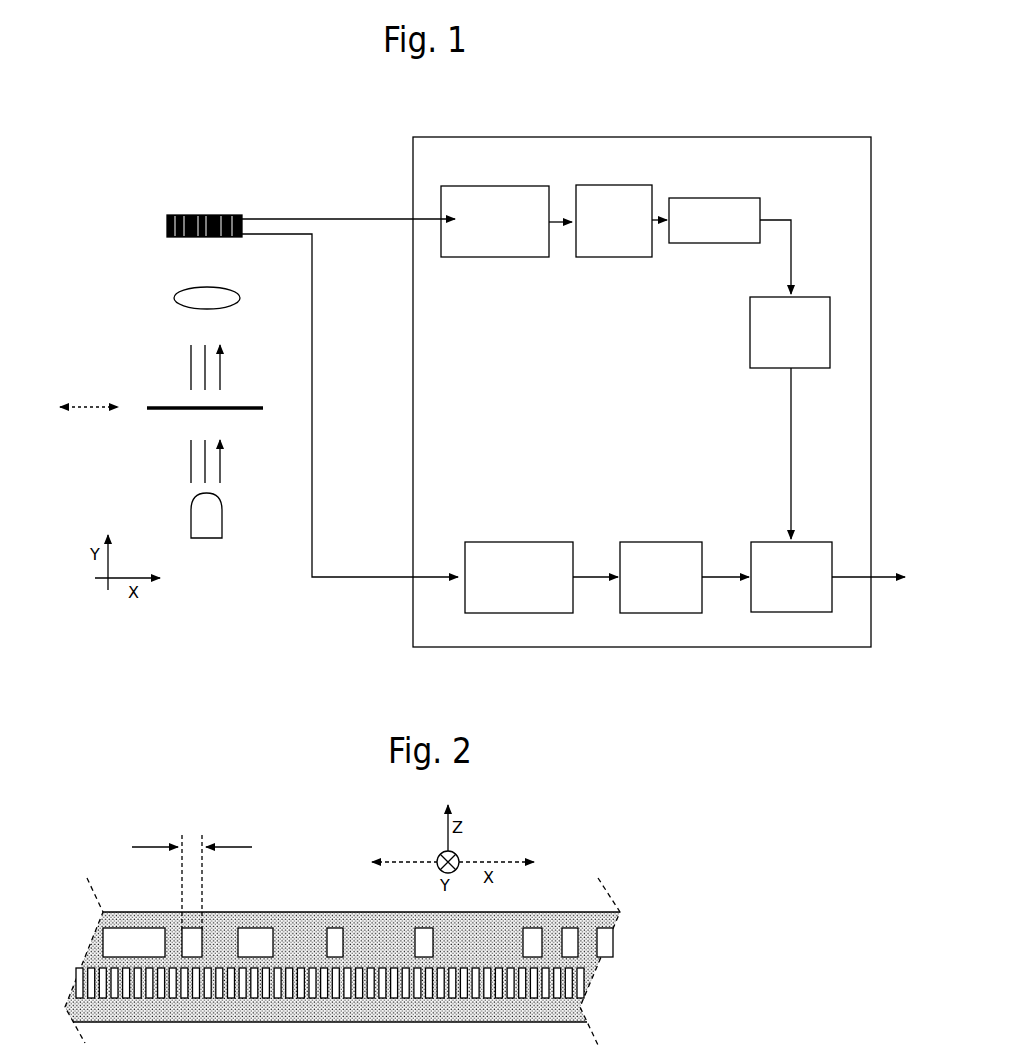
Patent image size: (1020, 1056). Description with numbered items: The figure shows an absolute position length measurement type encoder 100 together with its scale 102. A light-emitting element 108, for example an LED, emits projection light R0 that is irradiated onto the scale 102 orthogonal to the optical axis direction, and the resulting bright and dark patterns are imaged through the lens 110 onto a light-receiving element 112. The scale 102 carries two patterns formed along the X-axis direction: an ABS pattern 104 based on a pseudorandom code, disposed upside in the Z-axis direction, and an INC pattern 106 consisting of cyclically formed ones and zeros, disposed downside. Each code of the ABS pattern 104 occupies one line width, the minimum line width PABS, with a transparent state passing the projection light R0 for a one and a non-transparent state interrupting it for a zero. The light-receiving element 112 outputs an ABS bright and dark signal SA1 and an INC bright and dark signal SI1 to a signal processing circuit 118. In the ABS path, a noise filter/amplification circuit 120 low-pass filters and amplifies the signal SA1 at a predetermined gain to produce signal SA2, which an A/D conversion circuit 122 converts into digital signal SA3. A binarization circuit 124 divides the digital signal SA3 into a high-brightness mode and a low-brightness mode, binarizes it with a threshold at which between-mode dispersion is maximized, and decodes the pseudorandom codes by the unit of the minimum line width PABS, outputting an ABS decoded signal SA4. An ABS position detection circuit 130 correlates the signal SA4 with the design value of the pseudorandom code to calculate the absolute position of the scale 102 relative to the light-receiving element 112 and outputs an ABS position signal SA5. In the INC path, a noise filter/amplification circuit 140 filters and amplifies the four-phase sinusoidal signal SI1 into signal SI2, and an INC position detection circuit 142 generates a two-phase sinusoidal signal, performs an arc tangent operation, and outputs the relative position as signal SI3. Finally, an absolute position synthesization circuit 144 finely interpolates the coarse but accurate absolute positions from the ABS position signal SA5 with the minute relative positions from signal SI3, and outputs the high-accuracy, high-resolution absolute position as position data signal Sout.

In FIG. 1, the absolute position length measurement type encoder 100 is at (355, 136).
In FIG. 1, the scale 102 is at (180, 405).
In FIG. 2, the scale 102 is at (572, 912).
In FIG. 2, the ABS pattern 104 is at (607, 938).
In FIG. 2, the INC pattern 106 is at (582, 983).
In FIG. 1, the light-emitting element 108 is at (212, 521).
In FIG. 1, the lens 110 is at (228, 298).
In FIG. 1, the light-receiving element 112 is at (193, 214).
In FIG. 1, the signal processing circuit 118 is at (737, 137).
In FIG. 1, the noise filter/amplification circuit 120 is at (502, 186).
In FIG. 1, the A/D conversion circuit 122 is at (630, 171).
In FIG. 1, the binarization circuit 124 is at (735, 198).
In FIG. 1, the ABS position detection circuit 130 is at (813, 297).
In FIG. 1, the noise filter/amplification circuit 140 is at (525, 542).
In FIG. 1, the INC position detection circuit 142 is at (643, 542).
In FIG. 1, the absolute position synthesization circuit 144 is at (812, 542).
In FIG. 1, the ABS bright and dark signal SA1 is at (357, 220).
In FIG. 1, the signal SA2 is at (552, 223).
In FIG. 1, the digital signal SA3 is at (657, 222).
In FIG. 1, the ABS decoded signal SA4 is at (777, 220).
In FIG. 1, the ABS position signal SA5 is at (792, 422).
In FIG. 1, the INC bright and dark signal SI1 is at (340, 577).
In FIG. 1, the signal SI2 is at (600, 577).
In FIG. 1, the signal SI3 is at (732, 577).
In FIG. 1, the position data signal Sout is at (840, 578).
In FIG. 1, the projection light R0 is at (220, 447).
In FIG. 2, the minimum line width of the ABS pattern PABS is at (192, 873).